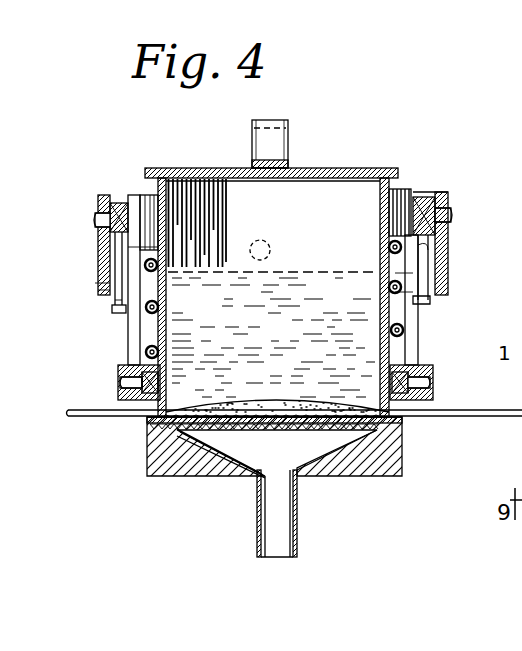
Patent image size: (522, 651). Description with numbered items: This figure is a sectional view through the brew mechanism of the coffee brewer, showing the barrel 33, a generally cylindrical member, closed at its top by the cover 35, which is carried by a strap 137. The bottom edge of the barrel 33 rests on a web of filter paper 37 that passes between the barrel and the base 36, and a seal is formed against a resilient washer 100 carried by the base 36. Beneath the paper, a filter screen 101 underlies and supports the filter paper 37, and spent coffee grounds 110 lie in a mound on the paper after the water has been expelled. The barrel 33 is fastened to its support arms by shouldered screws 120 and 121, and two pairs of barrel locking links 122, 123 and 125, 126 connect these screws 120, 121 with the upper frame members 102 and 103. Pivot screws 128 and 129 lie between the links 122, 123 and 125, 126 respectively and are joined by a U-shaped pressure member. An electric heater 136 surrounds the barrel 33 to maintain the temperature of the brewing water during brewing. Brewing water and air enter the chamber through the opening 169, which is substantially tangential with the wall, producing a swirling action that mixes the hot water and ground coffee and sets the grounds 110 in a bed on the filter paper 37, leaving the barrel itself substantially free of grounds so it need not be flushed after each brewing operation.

The barrel 33 is at (398, 190).
The cover 35 is at (355, 172).
The base 36 is at (372, 478).
The filter paper 37 is at (460, 411).
The resilient washer 100 is at (402, 424).
The filter screen 101 is at (320, 446).
The upper frame member 102 is at (98, 282).
The upper frame member 103 is at (452, 200).
The spent coffee grounds 110 is at (260, 402).
The shouldered screw 120 is at (118, 384).
The shouldered screw 121 is at (437, 380).
The barrel locking link 122 is at (128, 341).
The barrel locking link 123 is at (112, 254).
The barrel locking link 125 is at (420, 348).
The barrel locking link 126 is at (440, 257).
The pivot screw 128 is at (112, 302).
The pivot screw 129 is at (440, 300).
The electric heater 136 is at (404, 327).
The strap 137 is at (288, 140).
The opening 169 is at (274, 251).